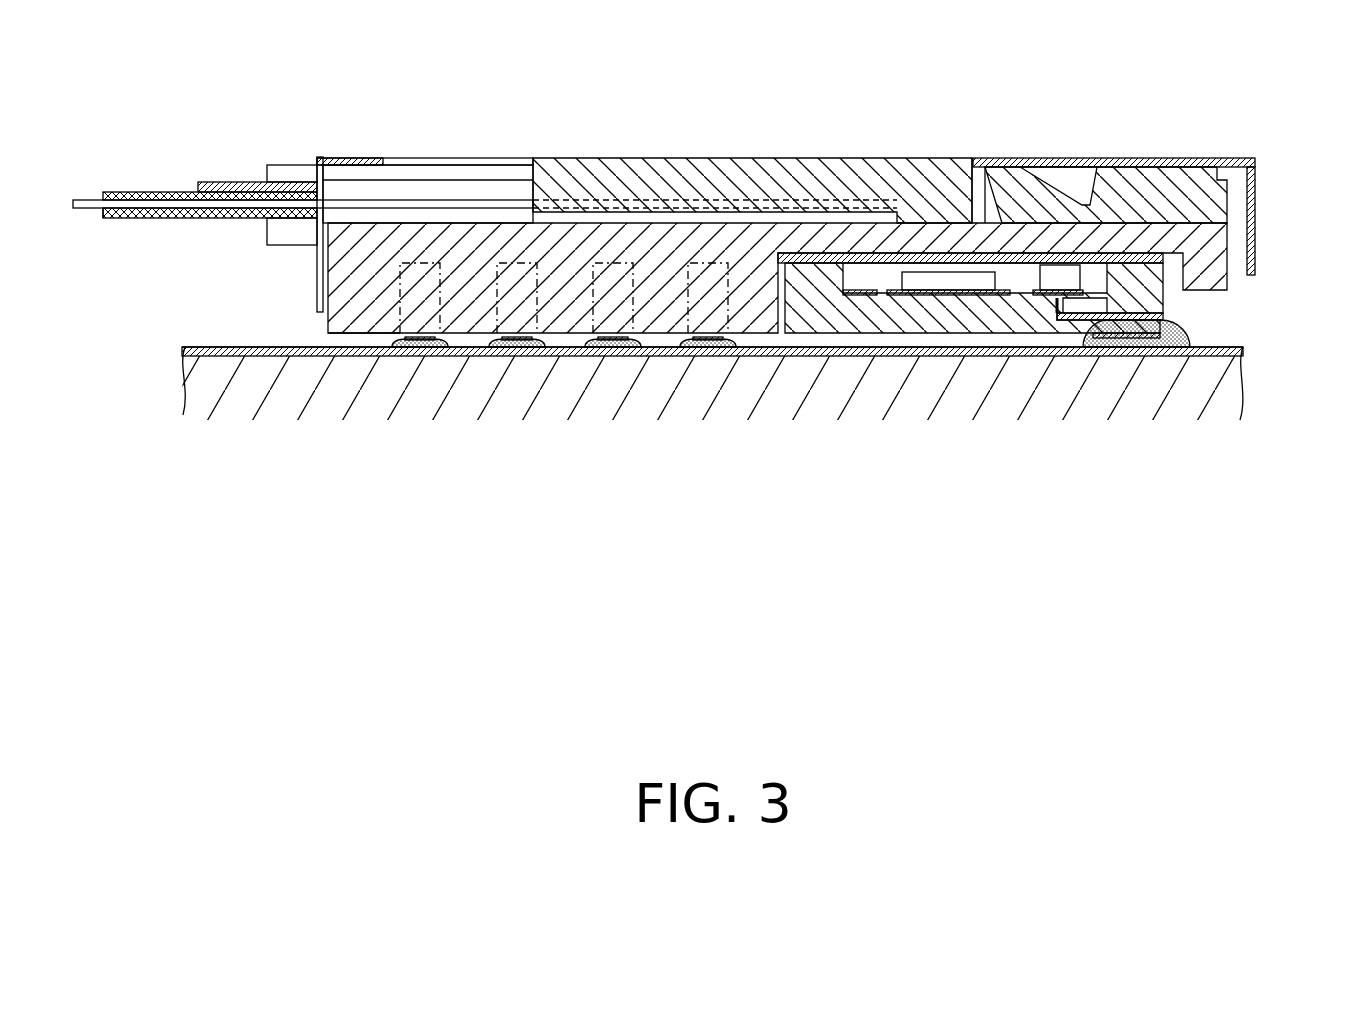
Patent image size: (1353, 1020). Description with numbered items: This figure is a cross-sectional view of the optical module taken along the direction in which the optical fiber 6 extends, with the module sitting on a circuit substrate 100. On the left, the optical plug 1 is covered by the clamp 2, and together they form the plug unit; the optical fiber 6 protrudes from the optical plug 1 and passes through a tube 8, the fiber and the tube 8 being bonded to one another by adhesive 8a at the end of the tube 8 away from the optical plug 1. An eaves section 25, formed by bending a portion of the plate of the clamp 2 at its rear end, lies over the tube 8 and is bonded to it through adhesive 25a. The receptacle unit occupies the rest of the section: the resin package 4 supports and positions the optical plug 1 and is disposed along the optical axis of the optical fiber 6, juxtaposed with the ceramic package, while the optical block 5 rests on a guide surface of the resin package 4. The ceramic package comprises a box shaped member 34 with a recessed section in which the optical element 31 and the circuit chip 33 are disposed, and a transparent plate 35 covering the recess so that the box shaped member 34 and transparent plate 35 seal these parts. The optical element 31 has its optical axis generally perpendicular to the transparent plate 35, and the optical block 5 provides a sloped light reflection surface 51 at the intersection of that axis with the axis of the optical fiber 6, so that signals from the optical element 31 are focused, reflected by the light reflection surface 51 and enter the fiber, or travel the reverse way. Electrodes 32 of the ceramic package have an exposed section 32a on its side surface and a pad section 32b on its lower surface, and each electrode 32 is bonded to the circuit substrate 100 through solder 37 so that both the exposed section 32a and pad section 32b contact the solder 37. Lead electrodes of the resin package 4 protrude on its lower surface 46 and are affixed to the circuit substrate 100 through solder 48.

The optical plug 1 is at (737, 158).
The clamp 2 is at (1243, 157).
The resin package 4 is at (443, 230).
The optical block 5 is at (1170, 167).
The optical fiber 6 is at (92, 200).
The tube 8 is at (125, 218).
The adhesive 8a is at (108, 218).
The eaves section 25 is at (233, 187).
The adhesive 25a is at (203, 187).
The optical element 31 is at (1033, 278).
The electrode 32 is at (1157, 413).
The exposed section 32a is at (1185, 330).
The pad section 32b is at (1092, 345).
The circuit chip 33 is at (943, 276).
The box shaped member 34 is at (935, 333).
The transparent plate 35 is at (880, 253).
The solder 37 is at (1173, 320).
The lower surface 46 is at (320, 343).
The solder 48 is at (403, 355).
The light reflection surface 51 is at (1063, 168).
The circuit substrate 100 is at (1223, 383).